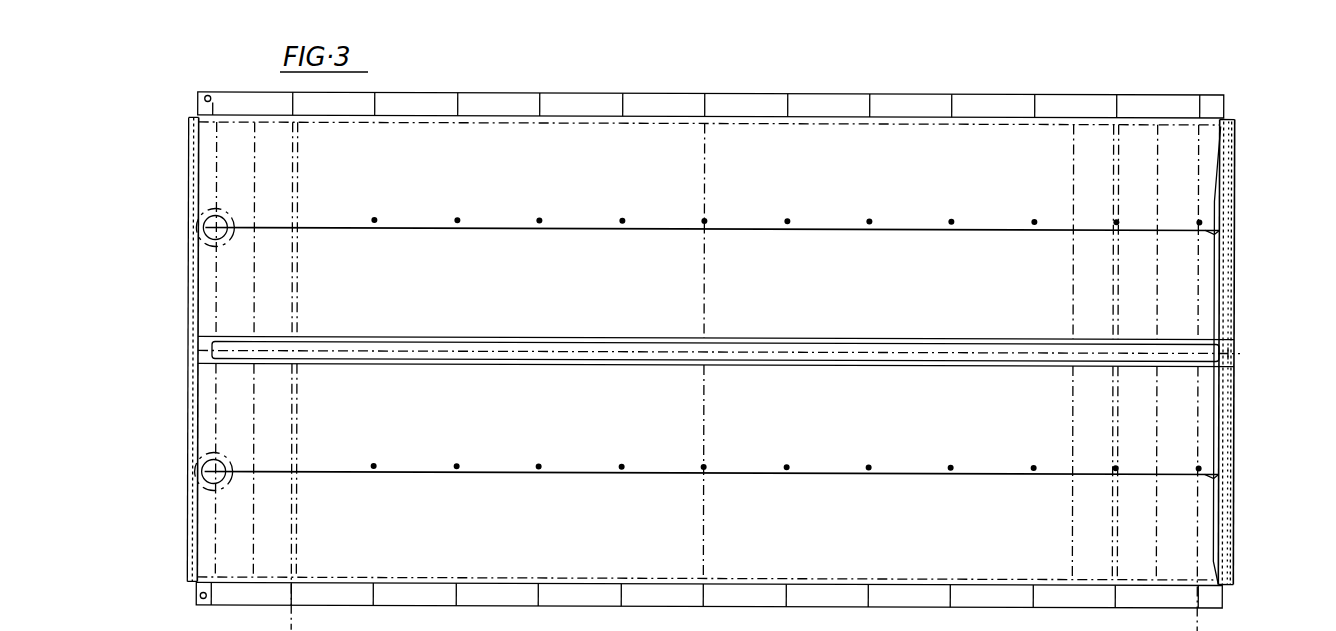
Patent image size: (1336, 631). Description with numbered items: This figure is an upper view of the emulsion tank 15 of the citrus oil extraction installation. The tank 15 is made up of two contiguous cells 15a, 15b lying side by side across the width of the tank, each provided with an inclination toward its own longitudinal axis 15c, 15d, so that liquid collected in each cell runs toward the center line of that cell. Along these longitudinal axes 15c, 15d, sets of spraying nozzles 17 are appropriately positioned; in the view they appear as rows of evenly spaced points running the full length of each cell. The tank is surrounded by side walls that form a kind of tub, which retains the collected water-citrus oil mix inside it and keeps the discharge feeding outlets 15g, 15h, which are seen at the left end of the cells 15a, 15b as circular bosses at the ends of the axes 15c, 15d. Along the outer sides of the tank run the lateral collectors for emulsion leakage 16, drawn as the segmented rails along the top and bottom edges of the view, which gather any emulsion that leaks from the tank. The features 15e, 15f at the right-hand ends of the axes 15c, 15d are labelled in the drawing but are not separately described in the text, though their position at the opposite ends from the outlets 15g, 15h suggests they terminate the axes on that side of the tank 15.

The emulsion tank 15 is at (1248, 328).
The cell 15a is at (785, 309).
The cell 15b is at (770, 414).
The longitudinal axis 15c is at (886, 229).
The longitudinal axis 15d is at (900, 473).
The right end of upper cross member 15e is at (1226, 229).
The right end of lower cross member 15f is at (1226, 474).
The discharge feeding outlet 15g is at (203, 236).
The discharge feeding outlet 15h is at (195, 482).
The lateral collector for emulsion leakage 16 is at (727, 630).
The spraying nozzles 17 is at (376, 220).